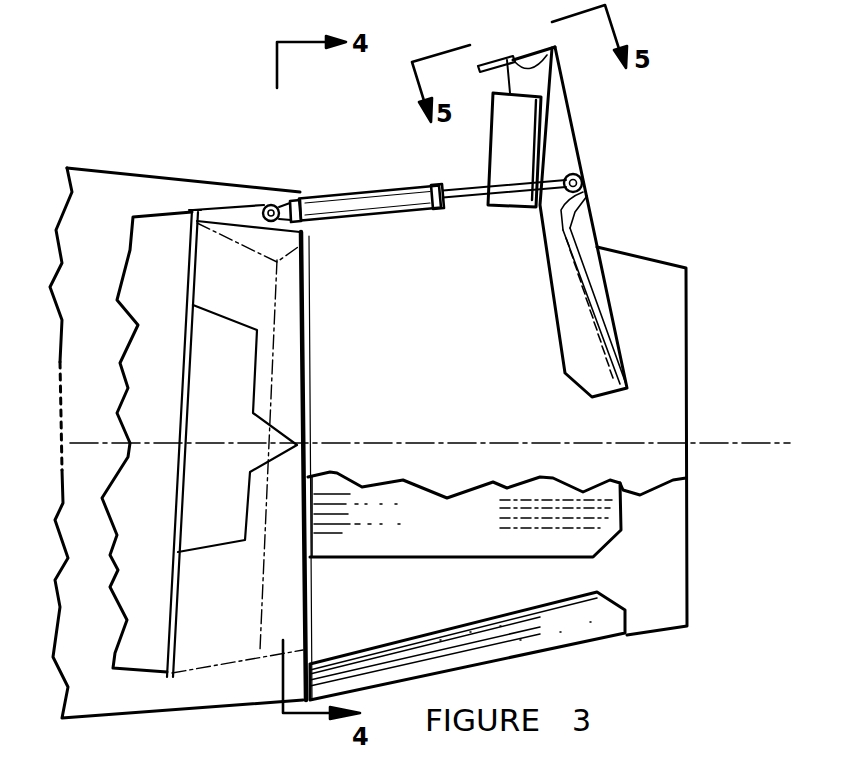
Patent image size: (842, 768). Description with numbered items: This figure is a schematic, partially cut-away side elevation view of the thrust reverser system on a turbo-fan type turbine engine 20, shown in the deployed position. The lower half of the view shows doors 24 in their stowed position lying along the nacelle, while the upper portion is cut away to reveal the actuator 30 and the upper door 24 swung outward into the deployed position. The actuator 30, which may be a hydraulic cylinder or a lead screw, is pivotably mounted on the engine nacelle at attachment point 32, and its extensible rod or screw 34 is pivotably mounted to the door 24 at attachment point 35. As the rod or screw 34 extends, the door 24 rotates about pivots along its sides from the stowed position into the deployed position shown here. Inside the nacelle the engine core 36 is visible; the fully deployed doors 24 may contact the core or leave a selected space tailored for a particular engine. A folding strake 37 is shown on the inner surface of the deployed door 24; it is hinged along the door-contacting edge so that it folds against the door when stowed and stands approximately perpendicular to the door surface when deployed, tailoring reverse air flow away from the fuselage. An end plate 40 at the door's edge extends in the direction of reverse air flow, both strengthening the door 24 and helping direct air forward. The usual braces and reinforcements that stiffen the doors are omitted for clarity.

The turbo-fan type turbine engine 20 is at (128, 172).
The door 24 is at (570, 85).
The actuator 30 is at (345, 190).
The attachment point 32 is at (272, 222).
The extensible rod or screw 34 is at (478, 187).
The attachment point 35 is at (582, 177).
The engine core 36 is at (283, 430).
The folding strake 37 is at (530, 140).
The end plate 40 is at (500, 57).